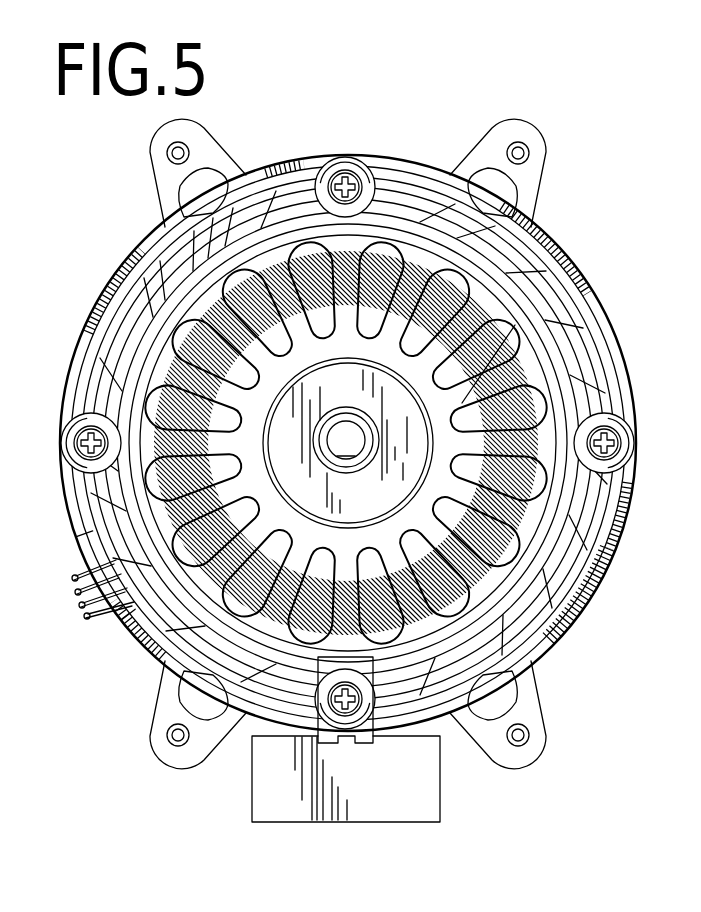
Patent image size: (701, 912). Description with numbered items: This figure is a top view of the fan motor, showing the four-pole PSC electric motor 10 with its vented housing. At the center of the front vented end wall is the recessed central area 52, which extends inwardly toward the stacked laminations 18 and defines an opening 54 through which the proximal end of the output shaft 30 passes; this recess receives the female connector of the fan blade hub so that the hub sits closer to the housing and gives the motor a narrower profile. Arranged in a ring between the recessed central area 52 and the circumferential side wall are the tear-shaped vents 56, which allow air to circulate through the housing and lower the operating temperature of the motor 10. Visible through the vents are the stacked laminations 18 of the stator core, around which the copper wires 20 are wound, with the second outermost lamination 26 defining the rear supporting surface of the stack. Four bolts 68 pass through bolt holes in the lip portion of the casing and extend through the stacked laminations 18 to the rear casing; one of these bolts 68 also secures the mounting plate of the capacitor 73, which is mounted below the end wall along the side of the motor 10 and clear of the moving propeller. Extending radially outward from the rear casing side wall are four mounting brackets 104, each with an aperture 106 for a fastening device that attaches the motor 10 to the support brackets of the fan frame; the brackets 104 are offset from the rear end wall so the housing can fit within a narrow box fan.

The electric motor 10 is at (103, 258).
The stacked laminations 18 is at (523, 565).
The copper wires 20 is at (520, 407).
The second outermost lamination 26 is at (583, 387).
The output shaft 30 is at (332, 440).
The recessed central area 52 is at (385, 427).
The opening 54 is at (337, 410).
The vents 56 is at (523, 318).
The bolts 68 is at (353, 175).
The capacitor 73 is at (441, 803).
The mounting brackets 104 is at (150, 188).
The apertures 106 is at (178, 153).